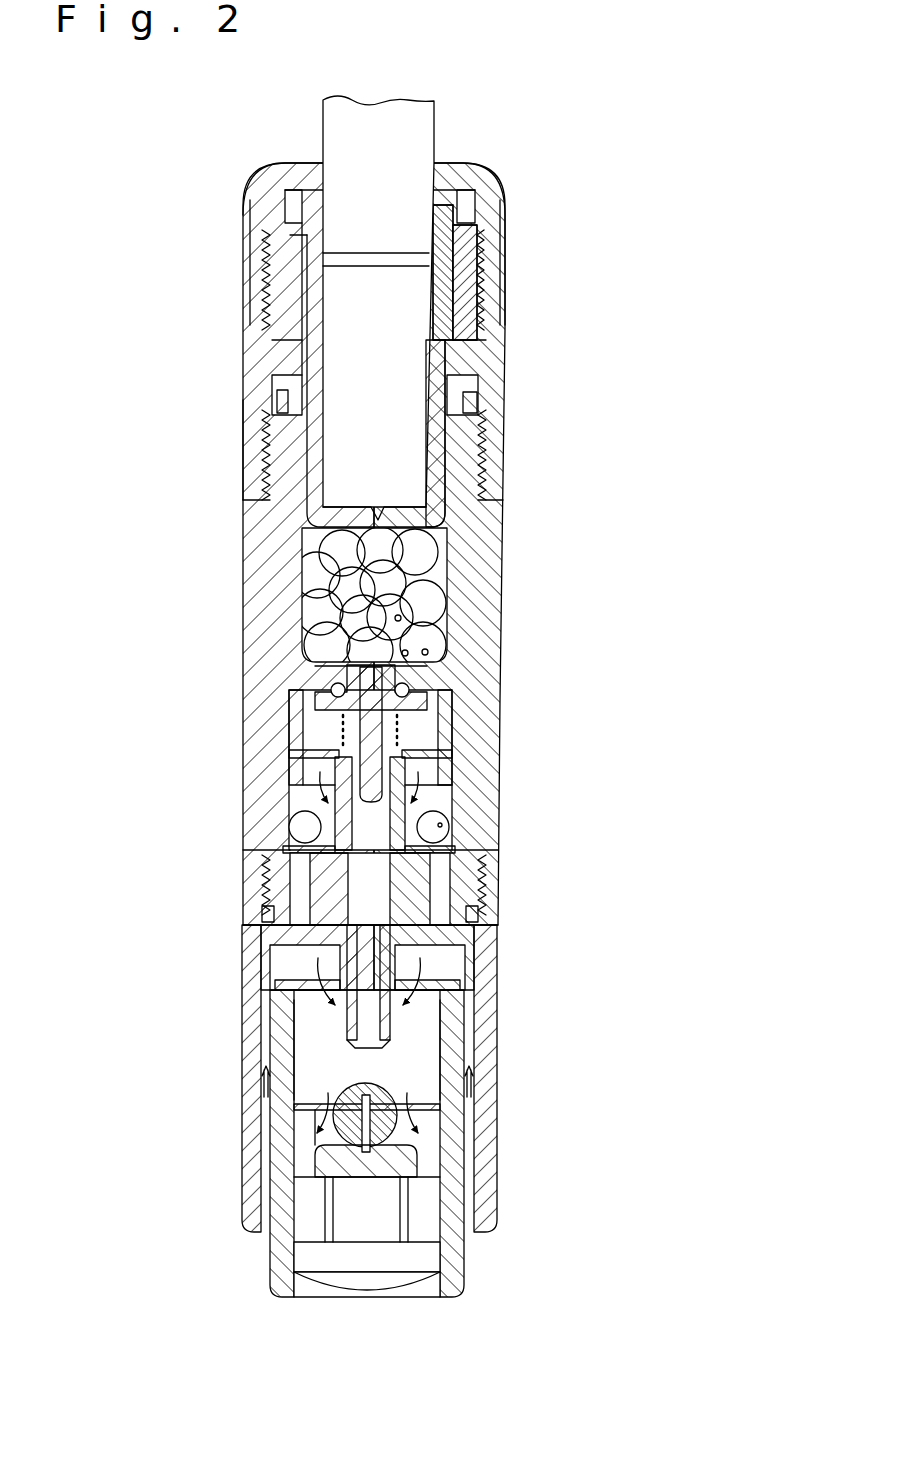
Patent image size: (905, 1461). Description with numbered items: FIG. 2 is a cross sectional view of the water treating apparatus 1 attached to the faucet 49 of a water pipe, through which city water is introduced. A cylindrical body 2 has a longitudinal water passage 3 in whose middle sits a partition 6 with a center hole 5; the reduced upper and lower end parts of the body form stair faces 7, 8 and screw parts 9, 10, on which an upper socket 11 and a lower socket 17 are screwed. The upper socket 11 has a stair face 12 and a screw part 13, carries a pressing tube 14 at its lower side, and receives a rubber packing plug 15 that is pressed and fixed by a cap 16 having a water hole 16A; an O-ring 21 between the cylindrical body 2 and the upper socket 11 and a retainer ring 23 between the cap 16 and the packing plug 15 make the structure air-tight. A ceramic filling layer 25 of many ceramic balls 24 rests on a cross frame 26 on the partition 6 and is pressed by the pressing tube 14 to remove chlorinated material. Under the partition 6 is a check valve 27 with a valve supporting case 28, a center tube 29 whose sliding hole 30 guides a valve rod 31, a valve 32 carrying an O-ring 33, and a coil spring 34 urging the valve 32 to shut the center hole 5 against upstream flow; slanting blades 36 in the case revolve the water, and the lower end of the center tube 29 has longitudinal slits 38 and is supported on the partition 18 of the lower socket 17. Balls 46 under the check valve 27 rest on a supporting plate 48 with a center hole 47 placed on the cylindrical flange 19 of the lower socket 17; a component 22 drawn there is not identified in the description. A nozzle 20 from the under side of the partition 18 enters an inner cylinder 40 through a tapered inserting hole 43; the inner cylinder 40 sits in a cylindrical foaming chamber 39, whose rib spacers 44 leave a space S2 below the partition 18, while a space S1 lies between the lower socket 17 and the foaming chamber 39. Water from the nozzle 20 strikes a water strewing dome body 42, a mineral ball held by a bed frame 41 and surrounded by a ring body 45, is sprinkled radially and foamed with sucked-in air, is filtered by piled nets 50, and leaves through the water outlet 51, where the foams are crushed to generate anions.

The water treating apparatus 1 is at (527, 448).
The cylindrical body 2 is at (232, 575).
The water passage 3 is at (443, 540).
The center hole 5 is at (345, 672).
The partition 6 is at (420, 678).
The stair face 7 is at (258, 488).
The stair face 8 is at (250, 868).
The screw part 9 is at (262, 472).
The screw part 10 is at (280, 890).
The upper socket 11 is at (495, 355).
The stair face 12 is at (250, 338).
The screw part 13 is at (265, 262).
The pressing tube 14 is at (270, 428).
The packing plug 15 is at (440, 288).
The cap 16 is at (462, 178).
The water hole 16A is at (437, 165).
The lower socket 17 is at (243, 1127).
The partition 18 is at (287, 963).
The cylindrical flange 19 is at (272, 914).
The nozzle 20 is at (410, 950).
The O-ring 21 is at (470, 395).
The seal ring 22 is at (472, 930).
The retainer ring 23 is at (482, 205).
The ceramic balls 24 is at (398, 618).
The ceramic filling layer 25 is at (310, 606).
The cross frame 26 is at (405, 653).
The check valve 27 is at (287, 731).
The valve supporting case 28 is at (373, 775).
The center tube 29 is at (287, 838).
The sliding hole 30 is at (290, 768).
The valve rod 31 is at (452, 728).
The valve 32 is at (425, 652).
The O-ring 33 is at (409, 690).
The coil spring 34 is at (430, 713).
The blade 36 is at (300, 812).
The longitudinal slits 38 is at (348, 905).
The cylindrical foaming chamber 39 is at (458, 1243).
The inner cylinder 40 is at (445, 1043).
The bed frame 41 is at (416, 1165).
The water strewing dome body 42 is at (442, 1108).
The inserting hole 43 is at (323, 950).
The rib spacer 44 is at (287, 1017).
The ring body 45 is at (398, 1104).
The balls 46 is at (452, 812).
The center hole 47 is at (292, 928).
The supporting plate 48 is at (440, 825).
The faucet 49 is at (335, 357).
The nets 50 is at (400, 1282).
The water outlet 51 is at (287, 1290).
The space S1 is at (560, 1212).
The space S2 is at (575, 963).